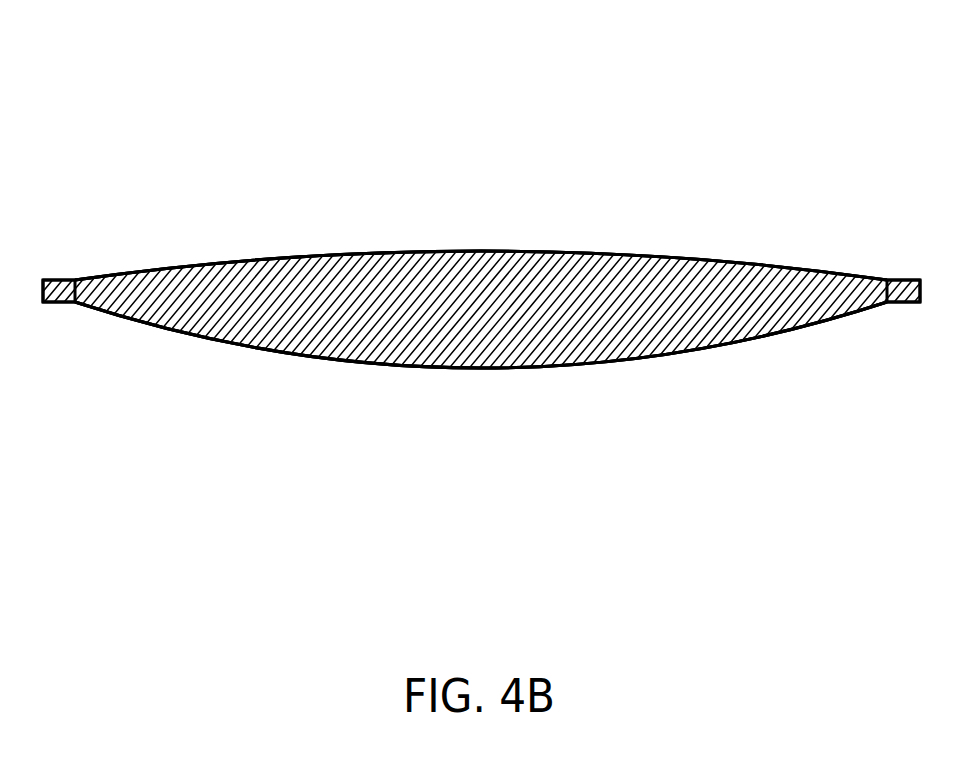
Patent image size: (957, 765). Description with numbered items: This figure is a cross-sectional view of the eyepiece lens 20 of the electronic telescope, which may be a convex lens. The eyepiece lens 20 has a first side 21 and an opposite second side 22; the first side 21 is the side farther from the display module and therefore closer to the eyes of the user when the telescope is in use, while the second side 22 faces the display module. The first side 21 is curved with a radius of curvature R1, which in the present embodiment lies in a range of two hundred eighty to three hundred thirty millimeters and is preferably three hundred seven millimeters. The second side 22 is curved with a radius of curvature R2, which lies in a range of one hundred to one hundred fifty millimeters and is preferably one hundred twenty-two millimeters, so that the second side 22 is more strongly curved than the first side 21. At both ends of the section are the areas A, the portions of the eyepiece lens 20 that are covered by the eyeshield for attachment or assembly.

The eyepiece lens 20 is at (128, 54).
The first side 21 is at (480, 250).
The second side 22 is at (482, 370).
The radius of curvature of the first side R1 is at (253, 262).
The radius of curvature of the second side R2 is at (720, 348).
The areas A is at (58, 278).